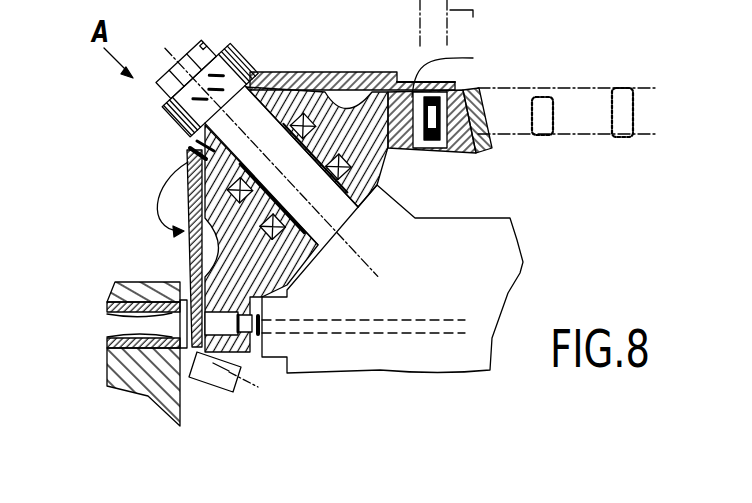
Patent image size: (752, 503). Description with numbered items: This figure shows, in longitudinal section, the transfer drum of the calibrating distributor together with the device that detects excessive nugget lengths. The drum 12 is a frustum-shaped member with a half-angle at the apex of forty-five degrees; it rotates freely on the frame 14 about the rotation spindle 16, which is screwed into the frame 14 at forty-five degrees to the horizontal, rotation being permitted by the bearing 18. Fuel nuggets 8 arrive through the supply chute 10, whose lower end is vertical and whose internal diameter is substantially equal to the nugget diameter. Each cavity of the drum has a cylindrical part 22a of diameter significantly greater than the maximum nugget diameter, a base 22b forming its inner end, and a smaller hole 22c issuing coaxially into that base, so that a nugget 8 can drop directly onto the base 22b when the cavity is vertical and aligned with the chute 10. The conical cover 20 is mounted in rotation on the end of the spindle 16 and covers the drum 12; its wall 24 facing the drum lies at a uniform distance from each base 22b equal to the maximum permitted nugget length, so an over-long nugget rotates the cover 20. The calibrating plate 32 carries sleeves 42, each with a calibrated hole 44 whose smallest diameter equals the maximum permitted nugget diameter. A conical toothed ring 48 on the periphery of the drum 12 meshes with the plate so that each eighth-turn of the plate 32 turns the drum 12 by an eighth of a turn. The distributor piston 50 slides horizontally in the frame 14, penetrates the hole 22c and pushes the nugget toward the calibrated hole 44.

The fuel nuggets 8 is at (618, 88).
The supply chute 10 is at (455, 24).
The drum 12 is at (373, 188).
The frame 14 is at (516, 240).
The rotation spindle 16 is at (190, 151).
The bearing 18 is at (268, 228).
The cover 20 is at (302, 71).
The cylindrical part 22a is at (570, 62).
The base 22b is at (413, 150).
The hole 22c is at (437, 150).
The wall 24 is at (398, 86).
The calibrating plate 32 is at (137, 380).
The sleeve 42 is at (108, 302).
The calibrated hole 44 is at (125, 329).
The conical toothed ring 48 is at (230, 387).
The distributor piston 50 is at (408, 313).